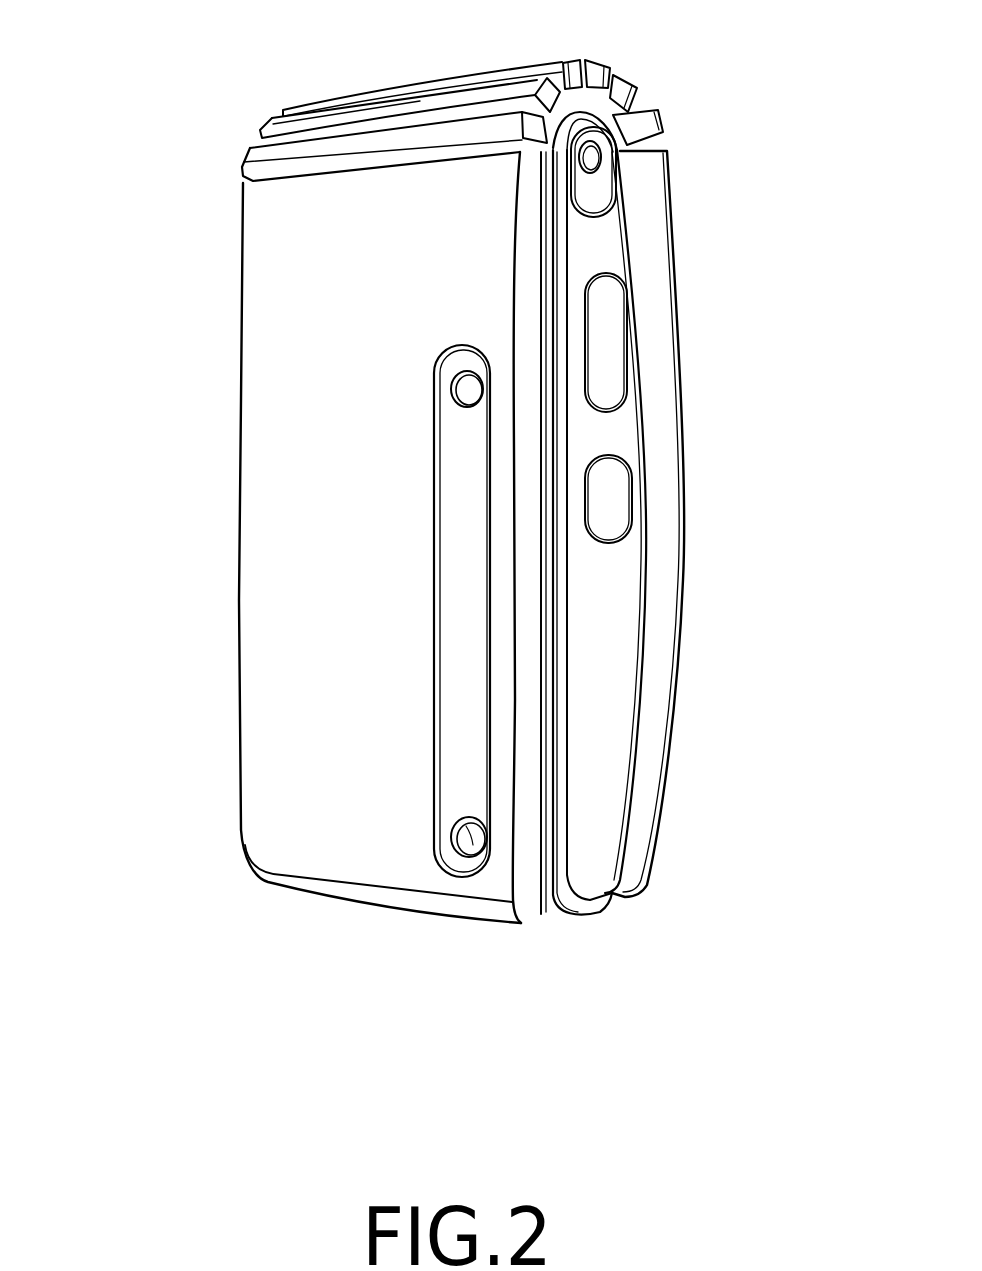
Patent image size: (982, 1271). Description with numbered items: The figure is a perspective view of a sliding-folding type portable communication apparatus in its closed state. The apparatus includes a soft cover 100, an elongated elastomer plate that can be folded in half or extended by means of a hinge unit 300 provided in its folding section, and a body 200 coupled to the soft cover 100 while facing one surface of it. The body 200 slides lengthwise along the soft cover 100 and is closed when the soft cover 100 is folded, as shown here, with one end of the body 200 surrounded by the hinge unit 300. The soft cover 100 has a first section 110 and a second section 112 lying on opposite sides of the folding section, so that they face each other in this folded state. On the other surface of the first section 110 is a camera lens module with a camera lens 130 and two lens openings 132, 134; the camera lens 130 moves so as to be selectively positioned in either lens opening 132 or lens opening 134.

The soft cover 100 is at (190, 570).
The first section 110 is at (270, 720).
The second section 112 is at (668, 560).
The camera lens 130 is at (457, 836).
The lens opening 132 is at (490, 858).
The lens opening 134 is at (463, 390).
The body 200 is at (602, 752).
The hinge unit 300 is at (634, 89).